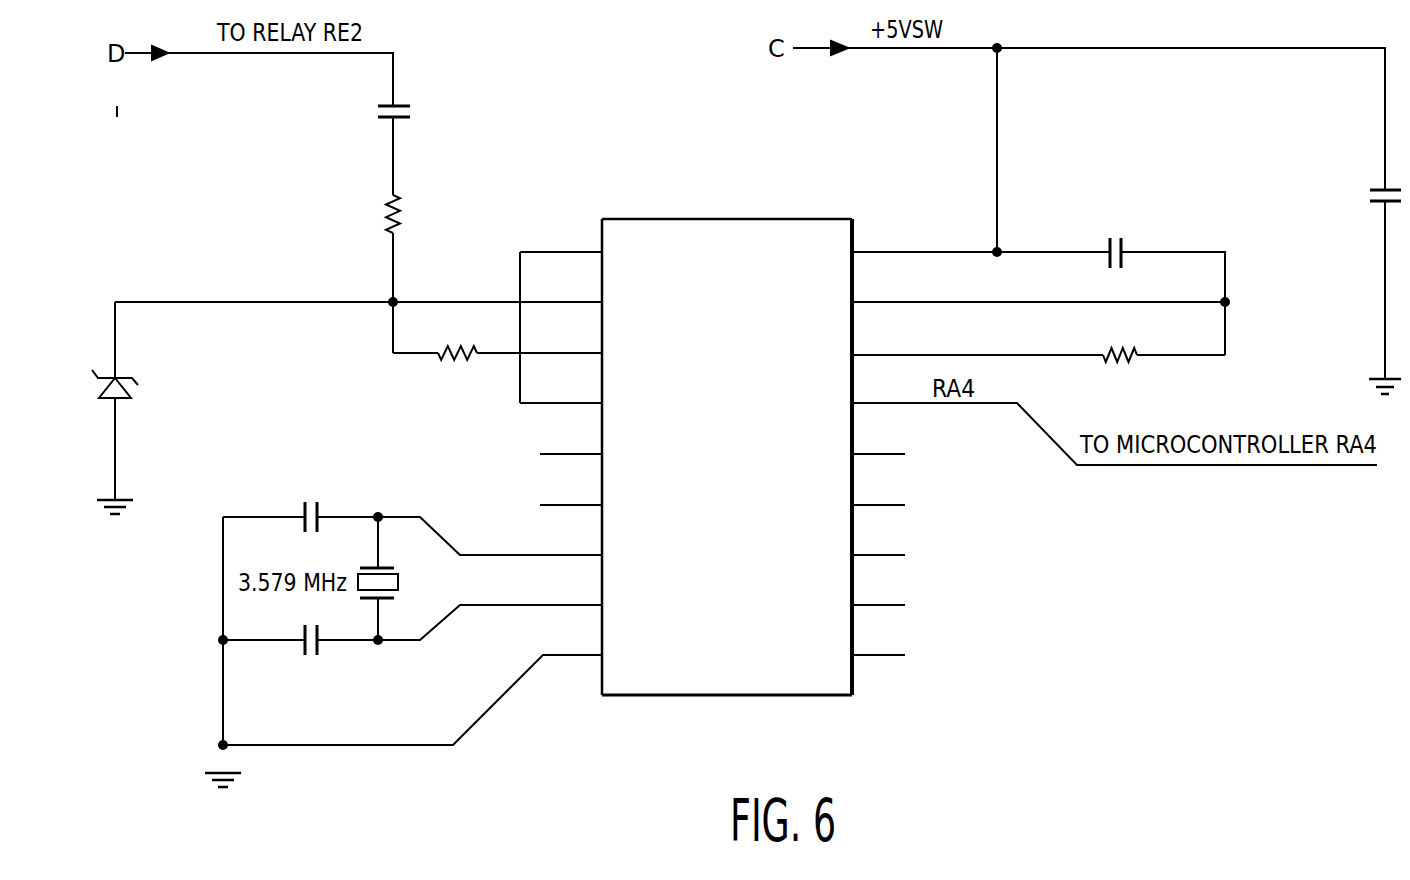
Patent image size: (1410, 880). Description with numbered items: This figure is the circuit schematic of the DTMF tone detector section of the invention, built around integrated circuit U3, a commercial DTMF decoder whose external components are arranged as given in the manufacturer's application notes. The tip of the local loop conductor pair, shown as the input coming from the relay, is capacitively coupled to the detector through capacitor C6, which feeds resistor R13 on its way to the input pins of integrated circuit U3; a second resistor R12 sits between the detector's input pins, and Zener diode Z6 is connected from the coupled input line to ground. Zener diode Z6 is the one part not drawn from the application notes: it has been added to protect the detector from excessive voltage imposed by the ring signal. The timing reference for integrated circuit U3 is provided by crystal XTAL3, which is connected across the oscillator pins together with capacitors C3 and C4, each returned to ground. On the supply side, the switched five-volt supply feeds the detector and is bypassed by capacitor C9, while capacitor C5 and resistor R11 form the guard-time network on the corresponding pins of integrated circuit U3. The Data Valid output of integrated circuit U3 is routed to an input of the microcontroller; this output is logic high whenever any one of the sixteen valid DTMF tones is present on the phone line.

The capacitor C6 .022uF 400V C6 is at (462, 105).
The resistor R13 120K R13 is at (423, 213).
The Zener diode Z6 is at (179, 408).
The resistor R12 120K R12 is at (459, 356).
The capacitor C3 22pF C3 is at (311, 488).
The capacitor C4 22pF C4 is at (309, 672).
The crystal XTAL3 3.579 MHz XTAL3 is at (416, 578).
The integrated circuit U3 is at (736, 428).
The capacitor C5 .1uF 25V C5 is at (1114, 219).
The resistor R11 270K R11 is at (1119, 358).
The capacitor C9 .01uF C9 is at (1350, 199).